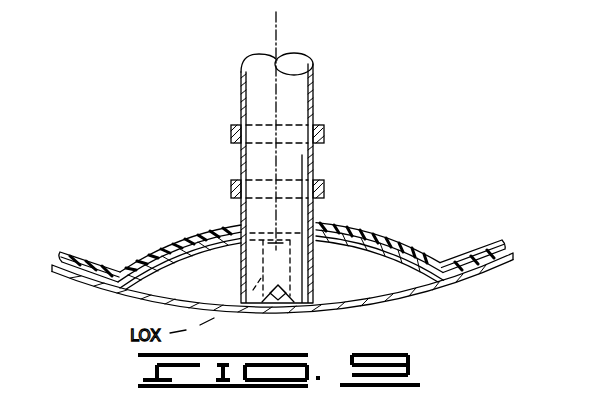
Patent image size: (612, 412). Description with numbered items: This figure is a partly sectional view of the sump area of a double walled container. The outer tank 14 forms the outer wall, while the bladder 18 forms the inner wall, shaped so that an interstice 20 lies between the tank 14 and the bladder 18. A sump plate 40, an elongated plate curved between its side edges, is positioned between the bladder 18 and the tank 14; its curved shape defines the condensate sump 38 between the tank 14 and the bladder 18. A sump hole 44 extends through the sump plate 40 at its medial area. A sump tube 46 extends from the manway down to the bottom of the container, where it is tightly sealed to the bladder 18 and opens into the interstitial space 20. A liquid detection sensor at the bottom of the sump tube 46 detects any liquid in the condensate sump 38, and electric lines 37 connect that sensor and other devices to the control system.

The electric lines 37 is at (283, 17).
The sump tube 46 is at (290, 102).
The sump hole 44 is at (296, 238).
The bladder 18 is at (133, 245).
The interstice 20 is at (200, 233).
The sump plate 40 is at (163, 263).
The outer tank 14 is at (440, 285).
The condensate sump 38 is at (357, 277).